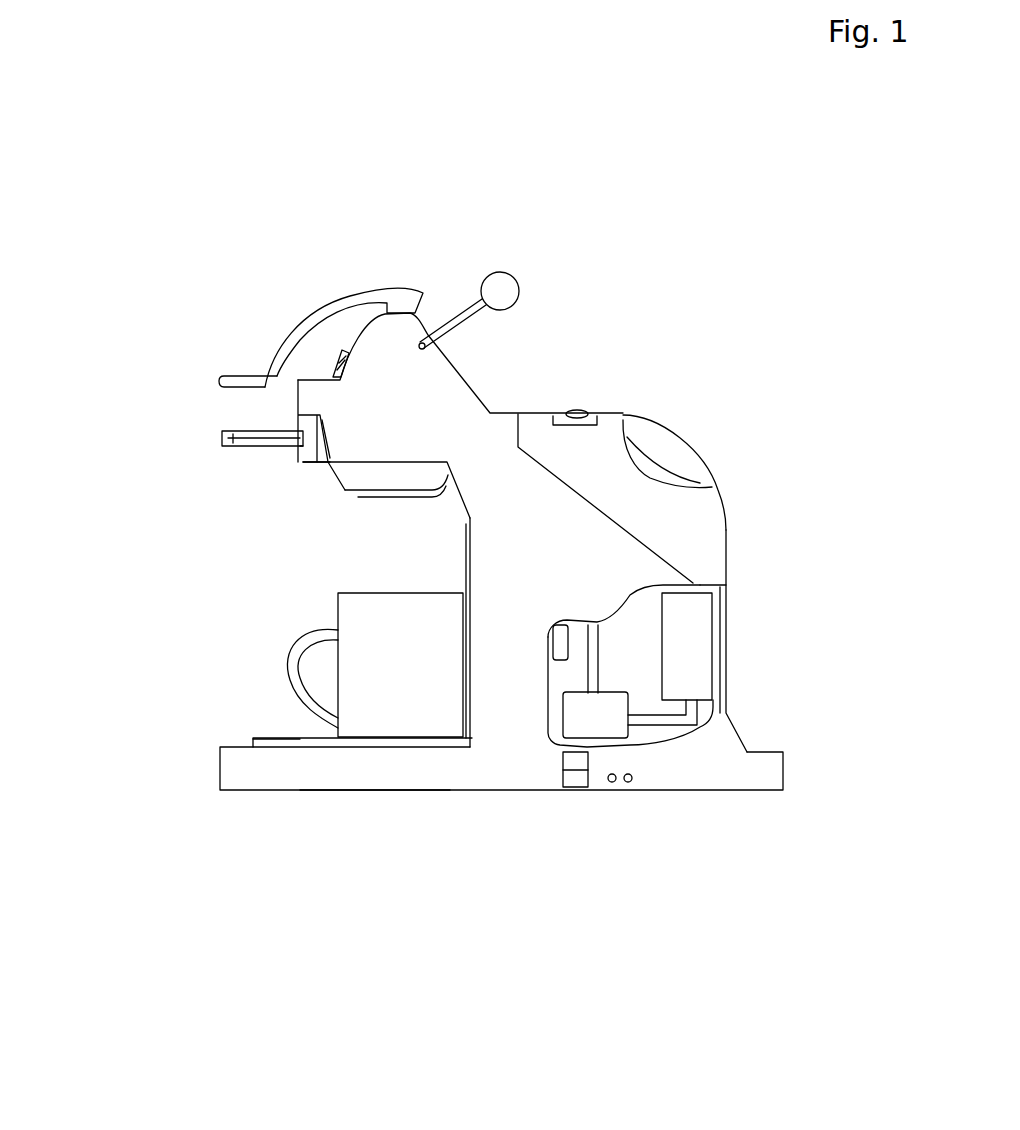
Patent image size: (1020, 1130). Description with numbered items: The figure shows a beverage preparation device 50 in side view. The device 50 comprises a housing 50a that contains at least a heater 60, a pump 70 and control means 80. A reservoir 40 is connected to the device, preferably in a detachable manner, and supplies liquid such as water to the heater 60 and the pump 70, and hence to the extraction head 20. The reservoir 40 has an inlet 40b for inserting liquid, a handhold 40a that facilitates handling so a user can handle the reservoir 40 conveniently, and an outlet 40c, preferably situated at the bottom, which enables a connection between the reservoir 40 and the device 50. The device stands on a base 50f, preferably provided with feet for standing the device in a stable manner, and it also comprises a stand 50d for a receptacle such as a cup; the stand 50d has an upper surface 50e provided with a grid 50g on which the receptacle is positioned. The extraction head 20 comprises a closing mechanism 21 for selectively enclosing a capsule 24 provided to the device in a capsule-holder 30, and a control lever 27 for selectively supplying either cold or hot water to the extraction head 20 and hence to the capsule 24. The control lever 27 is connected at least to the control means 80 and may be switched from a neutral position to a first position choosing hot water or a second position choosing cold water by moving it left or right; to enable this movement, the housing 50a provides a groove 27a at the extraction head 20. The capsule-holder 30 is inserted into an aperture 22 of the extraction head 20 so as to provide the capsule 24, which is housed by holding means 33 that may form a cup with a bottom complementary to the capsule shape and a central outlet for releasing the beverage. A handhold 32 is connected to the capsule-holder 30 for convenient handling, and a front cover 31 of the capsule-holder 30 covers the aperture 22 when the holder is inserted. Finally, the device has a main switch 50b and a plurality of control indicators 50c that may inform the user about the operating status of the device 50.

The extraction head 20 is at (409, 370).
The closing mechanism 21 is at (307, 313).
The aperture 22 is at (302, 448).
The capsule 24 is at (345, 492).
The control lever 27 is at (508, 282).
The groove 27a is at (423, 335).
The capsule-holder 30 is at (312, 450).
The front cover 31 is at (301, 422).
The handhold 32 is at (223, 432).
The holding means 33 is at (348, 472).
The reservoir 40 is at (692, 505).
The handhold 40a is at (683, 445).
The inlet 40b is at (597, 414).
The outlet 40c is at (708, 585).
The beverage preparation device 50 is at (597, 400).
The housing 50a is at (520, 720).
The main switch 50b is at (567, 790).
The control indicators 50c is at (622, 788).
The stand 50d is at (255, 775).
The upper surface 50e is at (293, 740).
The base 50f is at (370, 790).
The grid 50g is at (280, 740).
The heater 60 is at (698, 627).
The pump 70 is at (617, 732).
The control means 80 is at (548, 637).